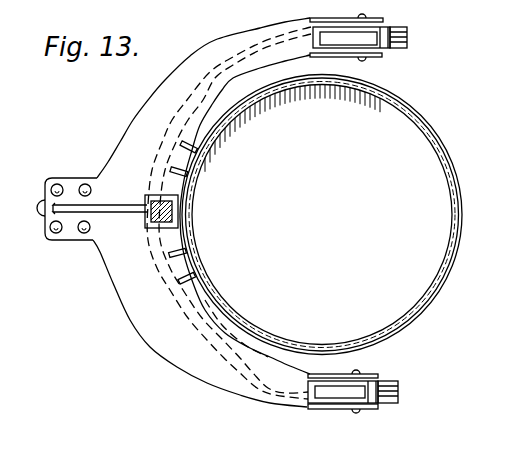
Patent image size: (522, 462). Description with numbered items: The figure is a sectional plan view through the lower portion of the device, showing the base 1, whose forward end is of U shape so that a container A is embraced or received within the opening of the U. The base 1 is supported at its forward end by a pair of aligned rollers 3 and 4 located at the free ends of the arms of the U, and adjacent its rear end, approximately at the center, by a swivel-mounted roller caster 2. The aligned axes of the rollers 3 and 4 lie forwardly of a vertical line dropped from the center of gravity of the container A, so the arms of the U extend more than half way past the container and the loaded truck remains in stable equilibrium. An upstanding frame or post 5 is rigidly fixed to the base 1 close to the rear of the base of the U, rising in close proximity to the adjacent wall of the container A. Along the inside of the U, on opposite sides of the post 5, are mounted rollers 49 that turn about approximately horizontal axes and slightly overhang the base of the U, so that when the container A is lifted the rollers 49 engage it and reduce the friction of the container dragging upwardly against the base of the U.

The base 1 is at (147, 310).
The roller caster 2 is at (37, 200).
The roller 3 is at (400, 393).
The roller 4 is at (407, 38).
The upstanding frame or post 5 is at (146, 223).
The rollers 49 is at (193, 253).
The container A is at (403, 123).